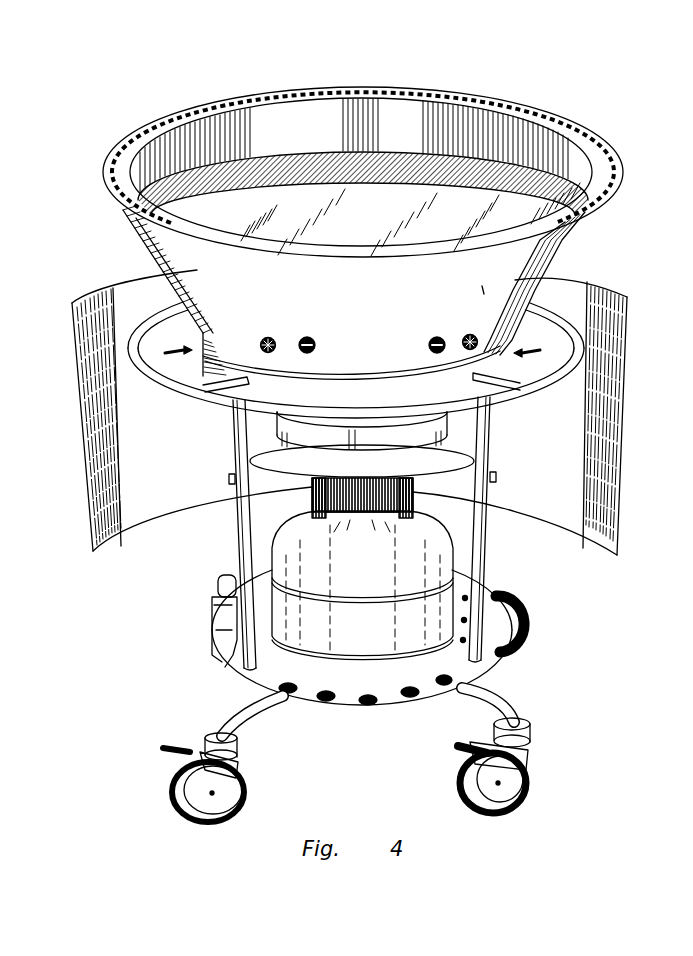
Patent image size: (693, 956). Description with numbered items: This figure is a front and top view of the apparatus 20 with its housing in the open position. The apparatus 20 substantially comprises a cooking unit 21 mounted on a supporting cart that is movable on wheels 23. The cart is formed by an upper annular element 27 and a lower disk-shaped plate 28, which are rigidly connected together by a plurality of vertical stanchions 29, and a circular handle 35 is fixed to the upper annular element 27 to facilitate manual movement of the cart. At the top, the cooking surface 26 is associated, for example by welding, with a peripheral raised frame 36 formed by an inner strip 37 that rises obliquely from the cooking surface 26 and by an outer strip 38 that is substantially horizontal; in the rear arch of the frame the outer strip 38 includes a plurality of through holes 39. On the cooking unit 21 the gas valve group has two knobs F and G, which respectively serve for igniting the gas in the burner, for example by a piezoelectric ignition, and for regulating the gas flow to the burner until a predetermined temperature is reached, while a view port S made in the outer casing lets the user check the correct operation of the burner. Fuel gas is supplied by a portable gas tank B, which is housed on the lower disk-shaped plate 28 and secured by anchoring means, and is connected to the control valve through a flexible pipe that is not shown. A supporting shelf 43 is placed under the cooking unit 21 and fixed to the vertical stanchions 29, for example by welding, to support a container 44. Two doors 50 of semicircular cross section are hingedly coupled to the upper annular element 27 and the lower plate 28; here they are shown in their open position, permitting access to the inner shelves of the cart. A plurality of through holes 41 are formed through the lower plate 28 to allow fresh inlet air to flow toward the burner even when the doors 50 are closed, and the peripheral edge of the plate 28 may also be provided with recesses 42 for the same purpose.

The apparatus 20 is at (105, 247).
The cooking unit 21 is at (387, 335).
The wheels 23 is at (525, 632).
The cooking surface 26 is at (360, 222).
The upper annular element 27 is at (427, 402).
The lower disk-shaped plate 28 is at (365, 690).
The vertical stanchions 29 is at (245, 557).
The circular handle 35 is at (150, 380).
The peripheral raised frame 36 is at (558, 140).
The inner strip 37 is at (533, 150).
The outer strip 38 is at (640, 142).
The through holes 39 is at (377, 94).
The through holes 41 is at (370, 706).
The recesses 42 is at (227, 630).
The supporting shelf 43 is at (303, 462).
The container 44 is at (413, 440).
The doors 50 is at (190, 445).
The view port S is at (268, 298).
The knob G is at (262, 338).
The knob F is at (310, 337).
The portable gas tank B is at (372, 573).